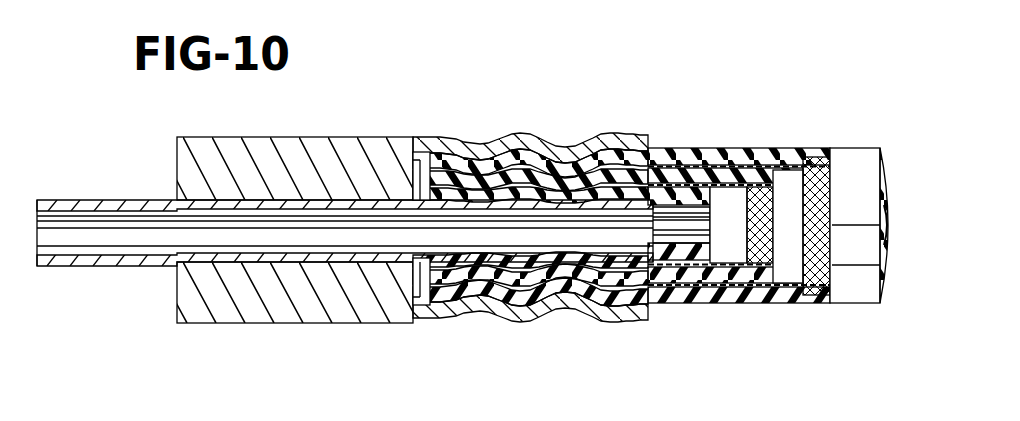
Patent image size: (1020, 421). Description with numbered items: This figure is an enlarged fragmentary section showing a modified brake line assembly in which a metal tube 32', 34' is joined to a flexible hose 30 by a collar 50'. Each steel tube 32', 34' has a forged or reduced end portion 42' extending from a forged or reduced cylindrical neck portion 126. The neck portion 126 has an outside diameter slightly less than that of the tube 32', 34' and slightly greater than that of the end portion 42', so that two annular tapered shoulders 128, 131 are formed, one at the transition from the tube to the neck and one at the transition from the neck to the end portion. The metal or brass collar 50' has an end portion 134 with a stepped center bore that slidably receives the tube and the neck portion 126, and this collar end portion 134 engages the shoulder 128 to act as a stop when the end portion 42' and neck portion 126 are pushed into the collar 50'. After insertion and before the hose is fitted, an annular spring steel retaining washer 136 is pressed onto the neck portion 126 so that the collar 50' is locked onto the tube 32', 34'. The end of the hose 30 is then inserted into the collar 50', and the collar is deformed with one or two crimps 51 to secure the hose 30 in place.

The hose 30 is at (722, 140).
The metal tube 32' is at (345, 183).
The metal tube 34' is at (681, 231).
The end portion 42' is at (530, 188).
The collar 50' is at (522, 109).
The crimp 51 is at (571, 308).
The neck portion 126 is at (335, 199).
The tapered shoulder 128 is at (266, 200).
The tapered shoulder 131 is at (452, 186).
The end portion of collar 134 is at (296, 323).
The retaining washer 136 is at (418, 288).